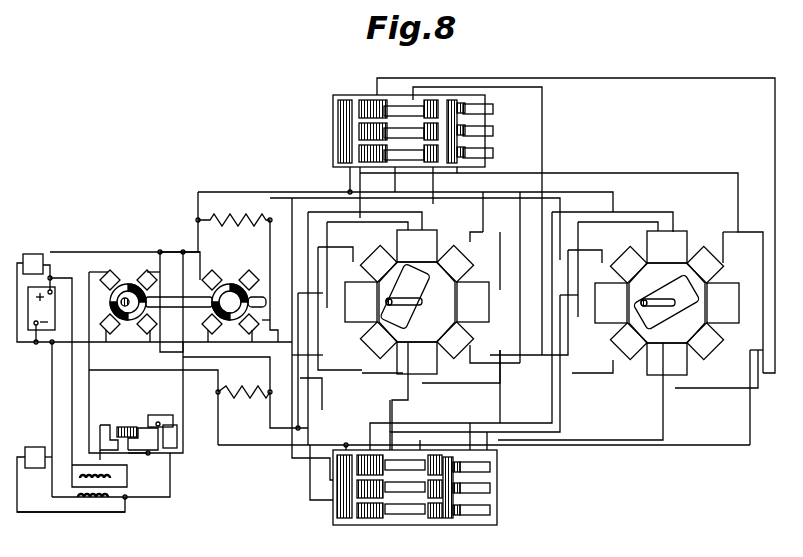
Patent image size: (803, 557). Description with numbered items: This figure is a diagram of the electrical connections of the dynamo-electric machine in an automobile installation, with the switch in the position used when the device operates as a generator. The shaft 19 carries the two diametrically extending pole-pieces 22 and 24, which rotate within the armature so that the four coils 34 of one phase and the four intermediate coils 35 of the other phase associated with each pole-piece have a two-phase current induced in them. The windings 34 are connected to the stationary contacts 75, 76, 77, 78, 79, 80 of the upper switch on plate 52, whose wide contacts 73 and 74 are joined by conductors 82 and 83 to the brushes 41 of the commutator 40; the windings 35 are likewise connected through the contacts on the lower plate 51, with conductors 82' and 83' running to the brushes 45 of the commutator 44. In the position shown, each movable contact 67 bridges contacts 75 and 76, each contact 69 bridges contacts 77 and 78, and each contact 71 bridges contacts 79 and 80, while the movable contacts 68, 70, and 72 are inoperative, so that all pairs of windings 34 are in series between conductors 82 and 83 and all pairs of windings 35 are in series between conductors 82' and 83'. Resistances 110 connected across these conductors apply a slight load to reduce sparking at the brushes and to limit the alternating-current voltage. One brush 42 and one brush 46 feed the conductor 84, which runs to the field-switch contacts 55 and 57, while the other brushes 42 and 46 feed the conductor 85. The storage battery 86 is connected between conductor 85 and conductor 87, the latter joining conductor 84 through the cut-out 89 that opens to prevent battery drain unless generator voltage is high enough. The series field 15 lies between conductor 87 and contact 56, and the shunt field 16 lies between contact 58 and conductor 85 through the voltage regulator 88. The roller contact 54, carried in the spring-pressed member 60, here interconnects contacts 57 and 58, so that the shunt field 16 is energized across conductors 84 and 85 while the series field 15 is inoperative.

The series winding 15 is at (99, 468).
The shunt winding 16 is at (100, 510).
The shaft 19 is at (542, 302).
The pole-piece 22 is at (405, 296).
The pole-piece 24 is at (666, 300).
The coils 34 is at (538, 305).
The coils 35 is at (539, 304).
The commutator 40 is at (239, 286).
The brushes 41 is at (211, 272).
The brushes 42 is at (258, 276).
The commutator 44 is at (131, 284).
The brushes 45 is at (126, 308).
The brushes 46 is at (129, 308).
The plate 51 is at (480, 522).
The plate 52 is at (372, 128).
The contact 54 is at (163, 409).
The stationary contact 55 is at (100, 438).
The stationary contact 56 is at (122, 427).
The stationary contact 57 is at (142, 428).
The stationary contact 58 is at (177, 436).
The member 60 is at (156, 422).
The movable contact 67 is at (404, 111).
The movable contact 68 is at (478, 109).
The movable contact 69 is at (404, 133).
The movable contact 70 is at (478, 131).
The movable contact 71 is at (404, 155).
The movable contact 72 is at (478, 153).
The stationary contact 73 is at (340, 110).
The stationary contact 74 is at (462, 105).
The stationary contact 75 is at (366, 100).
The stationary contact 76 is at (428, 100).
The stationary contact 77 is at (383, 130).
The stationary contact 78 is at (436, 125).
The stationary contact 79 is at (367, 180).
The stationary contact 80 is at (426, 193).
The conductor 82 is at (420, 209).
The conductor 82' is at (419, 419).
The conductor 83 is at (272, 337).
The conductor 83' is at (245, 392).
The conductor 84 is at (171, 252).
The conductor 85 is at (46, 344).
The storage battery 86 is at (41, 315).
The conductor 87 is at (72, 252).
The voltage regulator 88 is at (71, 427).
The cut-out 89 is at (33, 264).
The resistances 110 is at (237, 308).